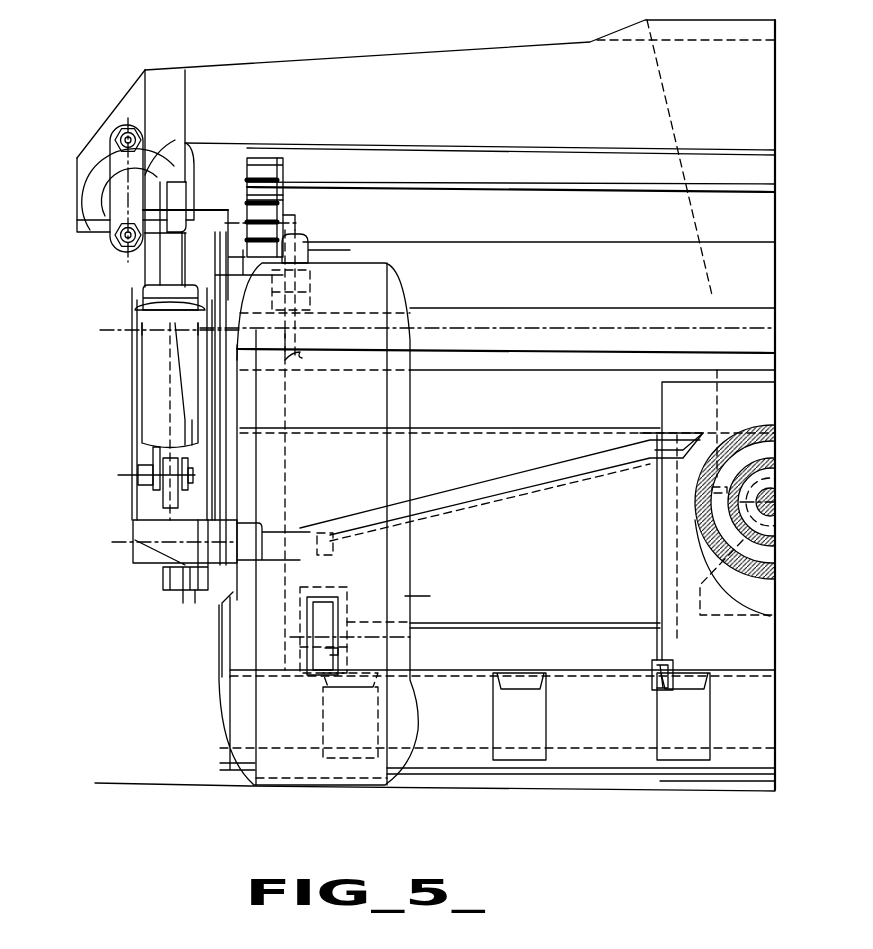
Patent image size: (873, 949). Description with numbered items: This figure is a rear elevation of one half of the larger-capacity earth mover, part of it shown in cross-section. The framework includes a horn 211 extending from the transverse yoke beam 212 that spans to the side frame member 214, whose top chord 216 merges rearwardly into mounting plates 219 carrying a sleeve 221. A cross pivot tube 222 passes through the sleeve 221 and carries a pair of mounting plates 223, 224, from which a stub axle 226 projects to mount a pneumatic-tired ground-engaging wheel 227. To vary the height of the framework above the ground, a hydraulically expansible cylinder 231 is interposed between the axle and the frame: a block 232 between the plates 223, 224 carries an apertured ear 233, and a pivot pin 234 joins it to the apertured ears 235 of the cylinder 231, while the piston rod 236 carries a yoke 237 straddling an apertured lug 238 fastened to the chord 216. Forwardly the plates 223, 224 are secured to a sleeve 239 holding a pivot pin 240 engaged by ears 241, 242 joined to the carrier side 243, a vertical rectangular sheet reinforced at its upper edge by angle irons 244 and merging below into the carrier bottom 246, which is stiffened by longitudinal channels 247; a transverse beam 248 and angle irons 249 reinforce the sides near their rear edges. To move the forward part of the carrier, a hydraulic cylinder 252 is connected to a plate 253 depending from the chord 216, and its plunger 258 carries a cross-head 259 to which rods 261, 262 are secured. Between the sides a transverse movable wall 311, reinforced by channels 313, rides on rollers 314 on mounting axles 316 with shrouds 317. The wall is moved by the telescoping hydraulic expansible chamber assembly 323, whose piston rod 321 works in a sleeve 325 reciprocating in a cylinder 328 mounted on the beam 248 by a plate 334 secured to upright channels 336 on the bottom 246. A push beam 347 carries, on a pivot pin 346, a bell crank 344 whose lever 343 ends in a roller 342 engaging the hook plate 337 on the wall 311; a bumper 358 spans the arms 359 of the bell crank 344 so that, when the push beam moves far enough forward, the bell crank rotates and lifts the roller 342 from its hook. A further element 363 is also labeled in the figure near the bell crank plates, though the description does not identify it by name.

The horn 211 is at (712, 290).
The transverse yoke beam 212 is at (553, 47).
The side frame member 214 is at (150, 66).
The top chord 216 is at (176, 76).
The mounting plates 219 is at (147, 172).
The sleeve 221 is at (153, 335).
The cross pivot tube 222 is at (543, 313).
The mounting plate 223 is at (130, 476).
The mounting plate 224 is at (198, 462).
The stub axle 226 is at (272, 525).
The ground-engaging wheel 227 is at (433, 596).
The hydraulically expansible cylinder 231 is at (137, 392).
The block 232 is at (135, 524).
The apertured ear 233 is at (165, 497).
The pivot pin 234 is at (138, 466).
The apertured ears 235 is at (153, 452).
The piston rod 236 is at (160, 265).
The yoke 237 is at (186, 194).
The apertured lug 238 is at (188, 181).
The sleeve 239 is at (192, 594).
The pivot pin 240 is at (163, 572).
The ear 241 is at (220, 618).
The ear 242 is at (165, 588).
The carrier side 243 is at (220, 696).
The angle irons 244 is at (198, 213).
The carrier bottom 246 is at (477, 671).
The channels 247 is at (660, 716).
The transverse beam 248 is at (447, 432).
The angle irons 249 is at (458, 492).
The hydraulic cylinder 252 is at (92, 172).
The plate 253 is at (78, 160).
The plunger 258 is at (100, 200).
The cross-head 259 is at (108, 225).
The rod 261 is at (122, 140).
The rod 262 is at (122, 246).
The transverse movable wall 311 is at (542, 563).
The channels 313 is at (470, 240).
The rollers 314 is at (330, 618).
The mounting axles 316 is at (333, 650).
The shrouds 317 is at (342, 586).
The piston rod 321 is at (769, 500).
The hydraulic expansible chamber assembly 323 is at (760, 428).
The sleeve 325 is at (717, 477).
The cylinder 328 is at (690, 493).
The plate 334 is at (680, 512).
The upright channels 336 is at (655, 650).
The hook plate 337 is at (302, 359).
The roller 342 is at (300, 293).
The lever 343 is at (308, 250).
The bell crank 344 is at (282, 208).
The pivot pin 346 is at (283, 220).
The push beam 347 is at (240, 275).
The bumper 358 is at (255, 165).
The arms 359 is at (281, 163).
The spacer plate 363 is at (265, 195).